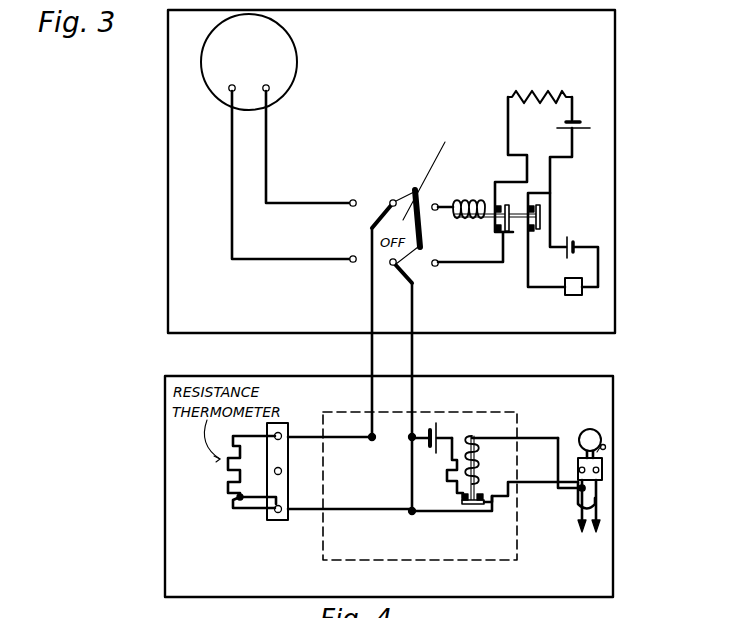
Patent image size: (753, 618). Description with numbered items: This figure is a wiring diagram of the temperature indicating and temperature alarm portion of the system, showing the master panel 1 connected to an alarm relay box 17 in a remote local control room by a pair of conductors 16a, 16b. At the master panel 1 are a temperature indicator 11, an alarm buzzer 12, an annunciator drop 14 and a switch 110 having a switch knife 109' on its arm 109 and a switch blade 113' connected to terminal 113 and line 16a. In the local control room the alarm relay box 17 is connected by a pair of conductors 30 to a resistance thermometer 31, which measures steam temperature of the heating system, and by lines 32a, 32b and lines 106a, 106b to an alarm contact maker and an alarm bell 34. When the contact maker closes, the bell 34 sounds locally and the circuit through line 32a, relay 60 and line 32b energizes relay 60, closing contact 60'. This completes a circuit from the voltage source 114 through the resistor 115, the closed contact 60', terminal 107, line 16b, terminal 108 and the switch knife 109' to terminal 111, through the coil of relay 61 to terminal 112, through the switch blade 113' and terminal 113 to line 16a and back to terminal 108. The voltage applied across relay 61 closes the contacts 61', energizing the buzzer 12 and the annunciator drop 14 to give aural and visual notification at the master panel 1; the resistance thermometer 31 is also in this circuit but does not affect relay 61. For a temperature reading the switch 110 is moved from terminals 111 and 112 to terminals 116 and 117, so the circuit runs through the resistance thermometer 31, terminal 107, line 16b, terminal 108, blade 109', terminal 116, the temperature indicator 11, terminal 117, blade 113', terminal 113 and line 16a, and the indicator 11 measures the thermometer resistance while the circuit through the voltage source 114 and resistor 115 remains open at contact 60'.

The master panel 1 is at (618, 114).
The temperature indicator 11 is at (288, 89).
The alarm buzzer 12 is at (566, 281).
The annunciator drop 14 is at (563, 100).
The conductor 16a is at (370, 355).
The conductor 16b is at (414, 363).
The alarm relay box 17 is at (385, 562).
The pair of conductors 30 is at (303, 439).
The resistance thermometer 31 is at (227, 477).
The line 32a is at (552, 440).
The line 32b is at (529, 497).
The alarm bell 34 is at (604, 441).
The relay 60 is at (511, 460).
The contact 60' is at (486, 511).
The relay 61 is at (495, 201).
The contact 61' is at (539, 192).
The line 106a is at (584, 514).
The line 106b is at (600, 512).
The terminal 107 is at (410, 514).
The terminal 108 is at (373, 441).
The switch arm 109 is at (377, 275).
The switch knife 109' is at (434, 277).
The switch 110 is at (402, 218).
The terminal 111 is at (437, 267).
The terminal 112 is at (435, 204).
The terminal 113 is at (387, 199).
The switch blade 113' is at (443, 171).
The voltage source 114 is at (432, 424).
The resistor 115 is at (448, 463).
The terminal 116 is at (350, 263).
The terminal 117 is at (350, 207).